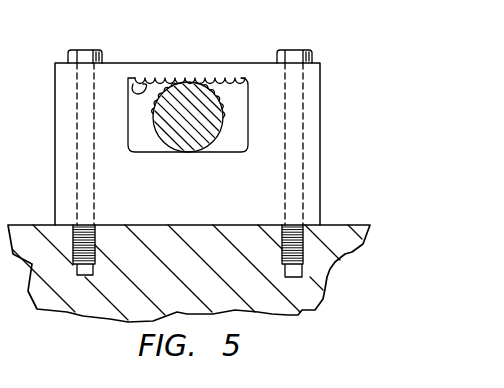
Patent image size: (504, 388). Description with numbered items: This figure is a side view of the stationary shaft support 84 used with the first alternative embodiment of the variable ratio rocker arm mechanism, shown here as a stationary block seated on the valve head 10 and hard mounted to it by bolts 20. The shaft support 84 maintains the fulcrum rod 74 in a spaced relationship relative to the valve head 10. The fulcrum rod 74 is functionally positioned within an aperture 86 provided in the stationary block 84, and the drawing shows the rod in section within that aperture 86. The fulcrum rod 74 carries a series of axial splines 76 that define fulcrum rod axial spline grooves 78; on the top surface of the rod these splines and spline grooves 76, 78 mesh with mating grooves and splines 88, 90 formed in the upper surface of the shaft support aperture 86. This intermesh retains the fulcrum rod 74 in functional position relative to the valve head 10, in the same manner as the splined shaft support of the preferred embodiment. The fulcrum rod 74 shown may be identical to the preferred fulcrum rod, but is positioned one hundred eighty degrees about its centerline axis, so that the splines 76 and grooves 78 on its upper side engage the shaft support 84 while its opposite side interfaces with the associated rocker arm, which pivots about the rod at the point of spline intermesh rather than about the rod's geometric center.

The valve head 10 is at (40, 241).
The bolts 20 is at (88, 50).
The fulcrum rod 74 is at (180, 138).
The axial splines 76 is at (227, 88).
The fulcrum rod axial spline grooves 78 is at (217, 83).
The stationary shaft support 84 is at (270, 97).
The aperture 86 is at (240, 120).
The mating grooves 88 is at (160, 80).
The mating splines 90 is at (130, 86).